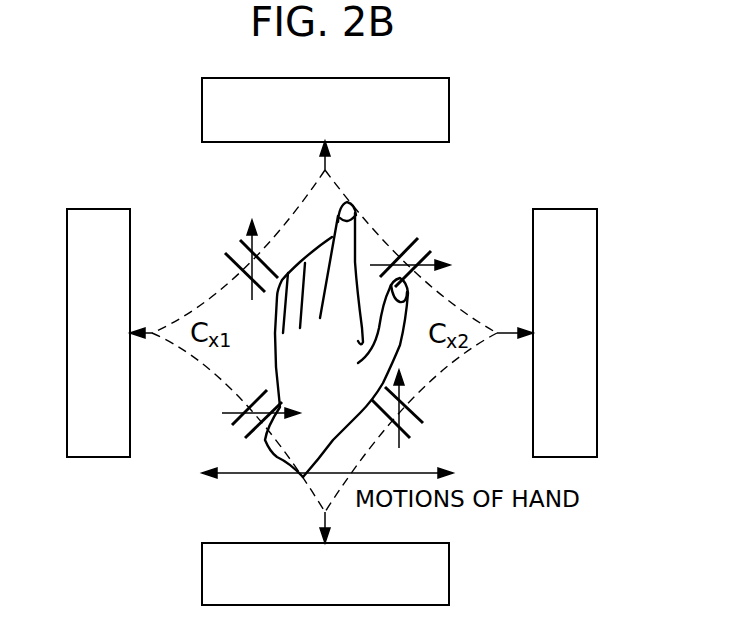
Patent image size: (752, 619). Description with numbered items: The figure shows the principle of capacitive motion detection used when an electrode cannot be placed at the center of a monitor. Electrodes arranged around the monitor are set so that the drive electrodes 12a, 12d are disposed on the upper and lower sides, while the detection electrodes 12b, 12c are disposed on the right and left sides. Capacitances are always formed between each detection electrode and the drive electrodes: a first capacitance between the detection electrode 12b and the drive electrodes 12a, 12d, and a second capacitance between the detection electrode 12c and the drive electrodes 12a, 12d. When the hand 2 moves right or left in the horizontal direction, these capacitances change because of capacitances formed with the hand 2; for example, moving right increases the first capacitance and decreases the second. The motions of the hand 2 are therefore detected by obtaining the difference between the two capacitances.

The hand 2 is at (392, 337).
The drive electrode 12a is at (438, 110).
The detection electrode 12b is at (114, 221).
The detection electrode 12c is at (580, 221).
The drive electrode 12d is at (438, 575).